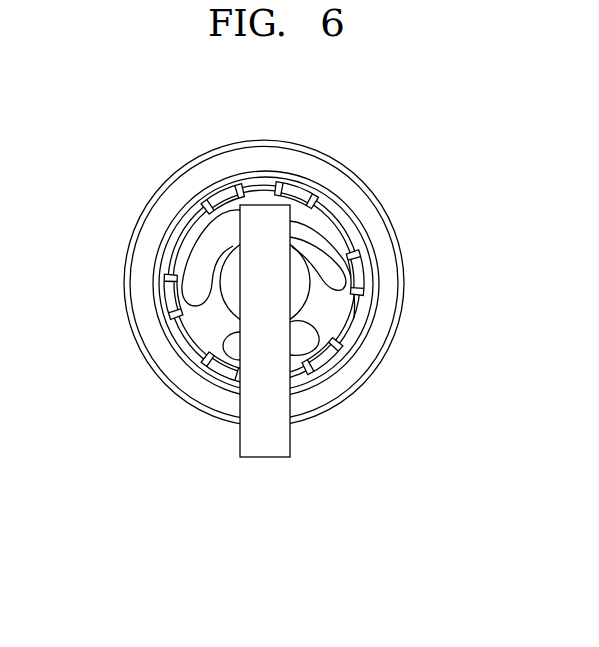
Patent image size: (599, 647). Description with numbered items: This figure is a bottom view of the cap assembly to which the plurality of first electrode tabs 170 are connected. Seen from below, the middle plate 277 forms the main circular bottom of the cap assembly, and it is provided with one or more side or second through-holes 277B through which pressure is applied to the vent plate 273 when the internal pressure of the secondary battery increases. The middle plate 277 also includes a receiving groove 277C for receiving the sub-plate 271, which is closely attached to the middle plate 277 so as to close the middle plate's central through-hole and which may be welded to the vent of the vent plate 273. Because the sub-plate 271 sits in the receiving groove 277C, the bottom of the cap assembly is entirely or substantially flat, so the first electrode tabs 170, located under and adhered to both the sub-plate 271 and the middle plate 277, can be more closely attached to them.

The first electrode tabs 170 is at (264, 447).
The sub-plate 271 is at (221, 282).
The vent plate 273 is at (211, 240).
The middle plate 277 is at (241, 188).
The through-holes 277B is at (351, 270).
The receiving groove 277C is at (290, 308).